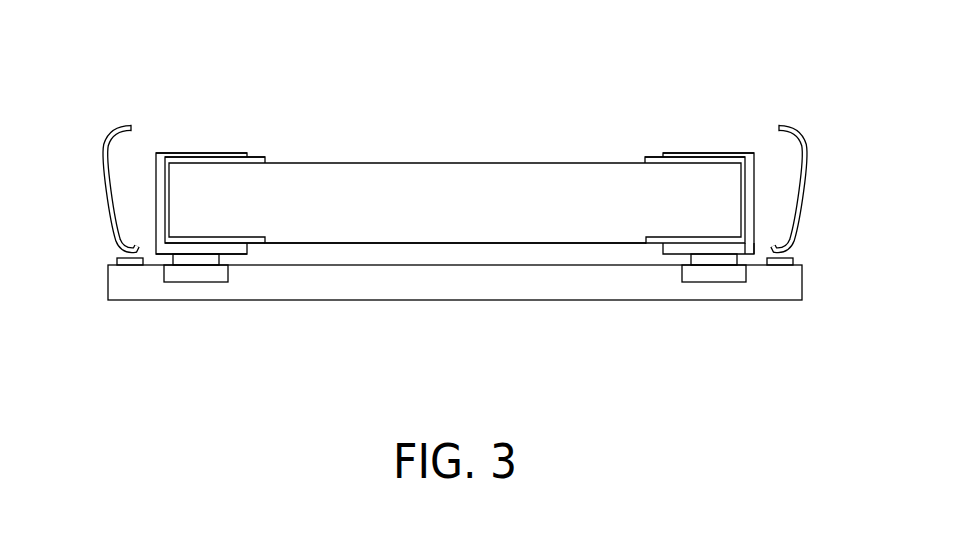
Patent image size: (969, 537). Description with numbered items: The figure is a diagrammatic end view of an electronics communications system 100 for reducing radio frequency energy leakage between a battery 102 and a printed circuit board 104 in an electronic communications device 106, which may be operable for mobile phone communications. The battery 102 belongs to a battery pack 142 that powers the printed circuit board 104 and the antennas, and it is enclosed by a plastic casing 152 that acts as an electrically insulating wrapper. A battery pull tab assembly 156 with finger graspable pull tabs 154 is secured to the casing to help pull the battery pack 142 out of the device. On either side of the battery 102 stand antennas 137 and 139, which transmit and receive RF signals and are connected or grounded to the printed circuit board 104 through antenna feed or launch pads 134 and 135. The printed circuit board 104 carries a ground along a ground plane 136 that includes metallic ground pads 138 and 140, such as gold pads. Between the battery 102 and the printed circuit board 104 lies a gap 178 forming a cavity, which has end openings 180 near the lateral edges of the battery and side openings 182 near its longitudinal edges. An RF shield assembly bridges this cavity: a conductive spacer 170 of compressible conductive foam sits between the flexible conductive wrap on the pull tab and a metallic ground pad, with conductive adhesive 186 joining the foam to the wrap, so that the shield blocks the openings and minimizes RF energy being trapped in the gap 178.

The electronics communications system 100 is at (455, 183).
The battery 102 is at (417, 172).
The printed circuit board (PCB) 104 is at (500, 292).
The electronic communications device 106 is at (455, 299).
The antenna feed or launch pad 134 is at (117, 258).
The antenna feed or launch pad 135 is at (795, 259).
The ground plane 136 is at (592, 266).
The antenna 137 is at (118, 127).
The metallic ground pad 138 is at (208, 272).
The antenna 139 is at (802, 130).
The metallic ground pad 140 is at (690, 275).
The battery pack 142 is at (560, 245).
The plastic casing 152 is at (653, 153).
The pull tab 154 is at (213, 155).
The battery pull tab assembly 156 is at (265, 158).
The conductive spacer 170 is at (733, 260).
The gap 178 is at (388, 261).
The end opening 180 is at (747, 260).
The side opening 182 is at (295, 255).
The conductive adhesive 186 is at (182, 254).